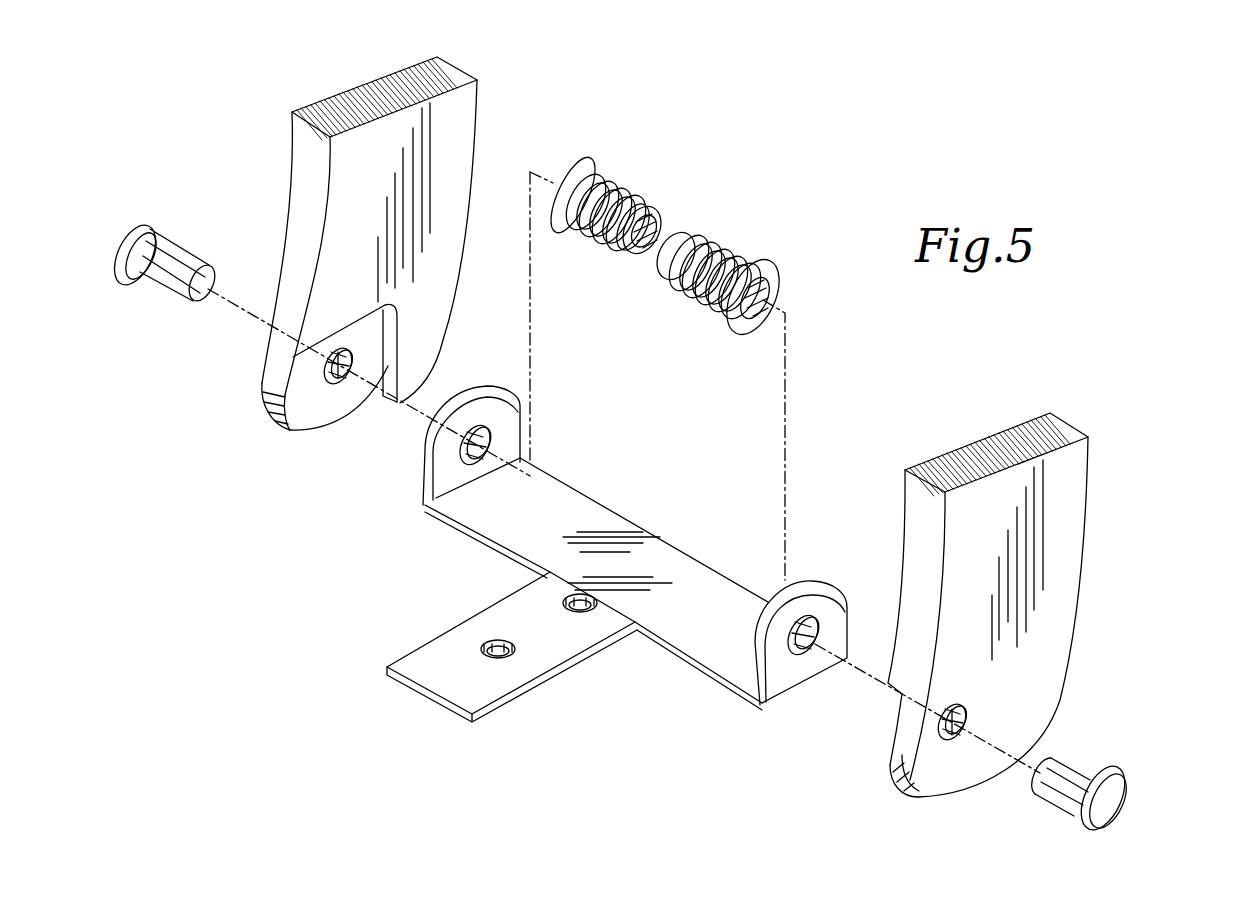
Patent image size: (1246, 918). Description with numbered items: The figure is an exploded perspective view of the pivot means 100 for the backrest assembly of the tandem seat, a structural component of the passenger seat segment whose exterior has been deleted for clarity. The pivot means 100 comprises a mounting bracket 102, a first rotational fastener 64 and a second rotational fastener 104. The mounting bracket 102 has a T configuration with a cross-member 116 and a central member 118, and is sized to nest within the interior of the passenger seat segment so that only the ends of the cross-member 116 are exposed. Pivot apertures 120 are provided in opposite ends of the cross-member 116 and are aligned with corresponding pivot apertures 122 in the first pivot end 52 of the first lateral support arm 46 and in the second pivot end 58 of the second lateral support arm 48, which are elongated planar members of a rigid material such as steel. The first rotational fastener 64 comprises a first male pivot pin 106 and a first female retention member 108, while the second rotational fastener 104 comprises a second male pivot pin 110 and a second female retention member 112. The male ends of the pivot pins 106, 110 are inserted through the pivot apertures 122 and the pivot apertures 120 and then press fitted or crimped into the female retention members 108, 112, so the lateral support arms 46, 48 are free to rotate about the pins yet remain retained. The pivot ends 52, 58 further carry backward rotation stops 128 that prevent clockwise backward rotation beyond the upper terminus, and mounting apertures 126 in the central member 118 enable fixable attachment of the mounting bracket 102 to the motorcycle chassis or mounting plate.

The pivot means 100 is at (857, 152).
The mounting bracket 102 is at (560, 647).
The second rotational fastener 104 is at (140, 228).
The first male pivot pin 106 is at (1117, 792).
The first female retention member 108 is at (622, 188).
The second male pivot pin 110 is at (160, 232).
The second female retention member 112 is at (710, 241).
The cross-member 116 is at (578, 497).
The central member 118 is at (440, 660).
The pivot apertures 120 is at (488, 412).
The pivot apertures 122 is at (266, 392).
The mounting apertures 126 is at (588, 597).
The backward rotation stops 128 is at (390, 363).
The first lateral support arm 46 is at (1075, 498).
The second lateral support arm 48 is at (572, 418).
The first pivot end 52 is at (1058, 590).
The second pivot end 58 is at (444, 270).
The first rotational fastener 64 is at (1087, 832).